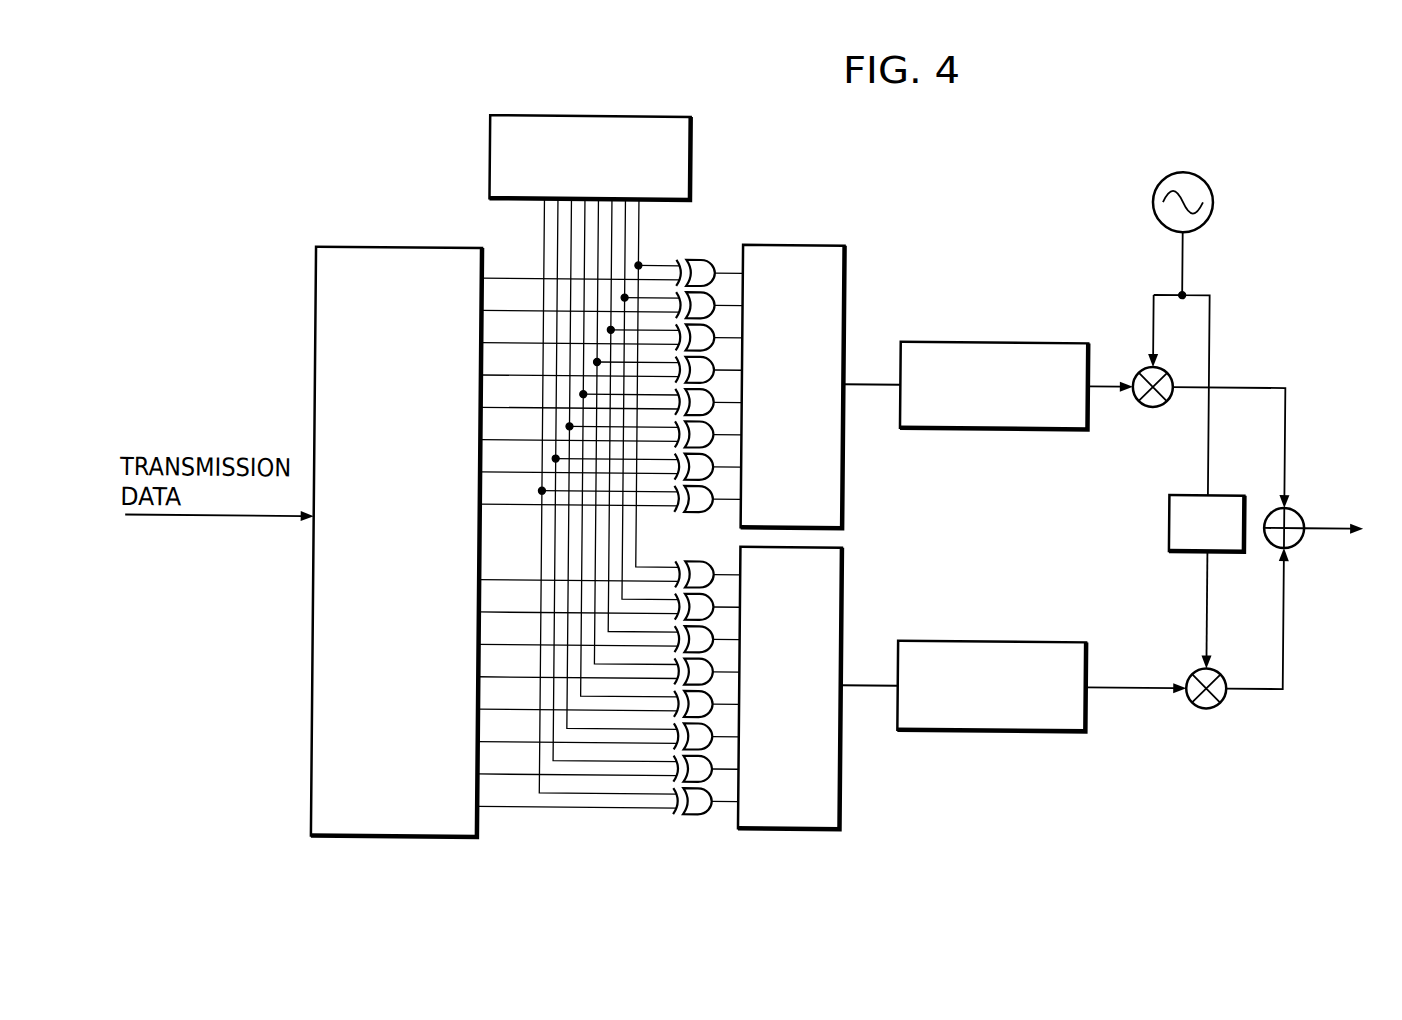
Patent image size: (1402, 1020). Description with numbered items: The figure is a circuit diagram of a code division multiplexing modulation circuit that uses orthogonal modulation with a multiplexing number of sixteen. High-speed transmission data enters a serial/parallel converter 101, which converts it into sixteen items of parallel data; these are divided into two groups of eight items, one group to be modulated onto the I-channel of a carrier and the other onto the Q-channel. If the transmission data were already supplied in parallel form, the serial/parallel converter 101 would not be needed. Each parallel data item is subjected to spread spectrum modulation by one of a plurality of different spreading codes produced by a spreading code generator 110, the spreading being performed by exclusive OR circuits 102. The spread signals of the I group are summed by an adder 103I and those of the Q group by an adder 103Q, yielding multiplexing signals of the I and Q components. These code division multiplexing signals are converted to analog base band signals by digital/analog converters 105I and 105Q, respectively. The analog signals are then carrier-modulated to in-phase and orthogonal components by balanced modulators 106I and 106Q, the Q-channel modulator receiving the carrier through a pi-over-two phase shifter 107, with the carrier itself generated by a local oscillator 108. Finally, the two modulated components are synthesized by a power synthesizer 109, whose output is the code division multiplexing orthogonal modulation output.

The serial/parallel converter 101 is at (380, 250).
The spreading code generator 110 is at (486, 138).
The exclusive OR circuits 102 is at (693, 259).
The adder (I-component) 103I is at (818, 244).
The adder (Q-component) 103Q is at (786, 831).
The digital/analog converter (I-component) 105I is at (966, 338).
The digital/analog converter (Q-component) 105Q is at (969, 639).
The balanced modulator (in-phase) 106I is at (1149, 404).
The balanced modulator (orthogonal) 106Q is at (1202, 706).
The π/2 phase shifter 107 is at (1167, 517).
The local oscillator 108 is at (1149, 198).
The power synthesizer 109 is at (1298, 538).